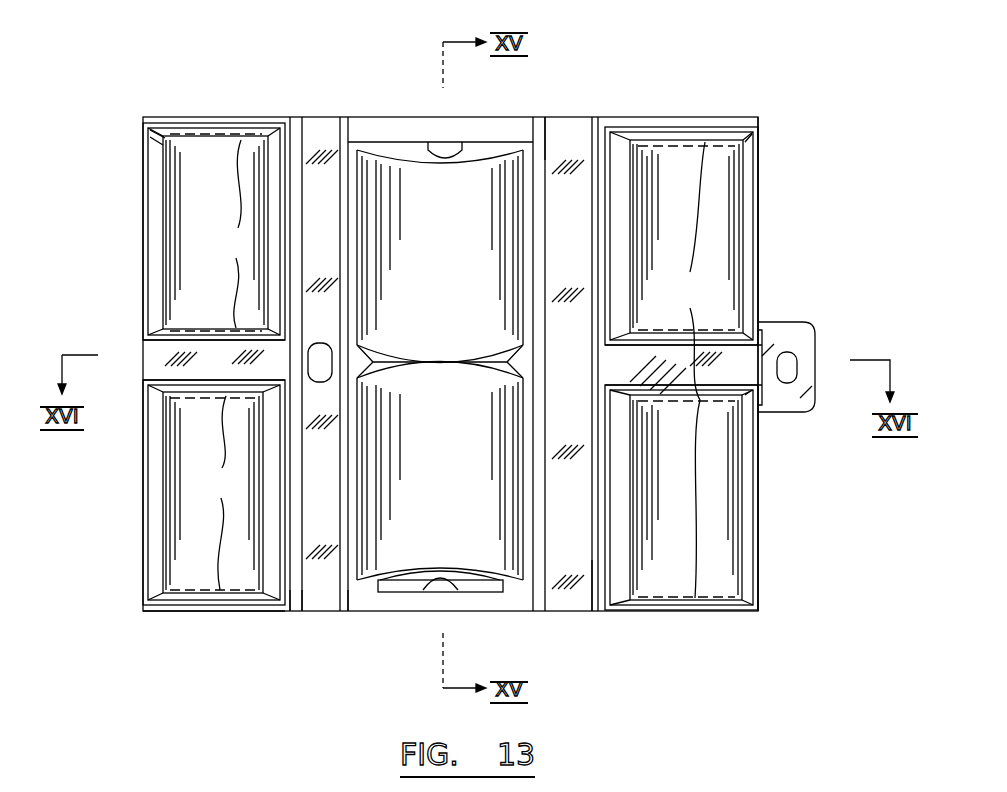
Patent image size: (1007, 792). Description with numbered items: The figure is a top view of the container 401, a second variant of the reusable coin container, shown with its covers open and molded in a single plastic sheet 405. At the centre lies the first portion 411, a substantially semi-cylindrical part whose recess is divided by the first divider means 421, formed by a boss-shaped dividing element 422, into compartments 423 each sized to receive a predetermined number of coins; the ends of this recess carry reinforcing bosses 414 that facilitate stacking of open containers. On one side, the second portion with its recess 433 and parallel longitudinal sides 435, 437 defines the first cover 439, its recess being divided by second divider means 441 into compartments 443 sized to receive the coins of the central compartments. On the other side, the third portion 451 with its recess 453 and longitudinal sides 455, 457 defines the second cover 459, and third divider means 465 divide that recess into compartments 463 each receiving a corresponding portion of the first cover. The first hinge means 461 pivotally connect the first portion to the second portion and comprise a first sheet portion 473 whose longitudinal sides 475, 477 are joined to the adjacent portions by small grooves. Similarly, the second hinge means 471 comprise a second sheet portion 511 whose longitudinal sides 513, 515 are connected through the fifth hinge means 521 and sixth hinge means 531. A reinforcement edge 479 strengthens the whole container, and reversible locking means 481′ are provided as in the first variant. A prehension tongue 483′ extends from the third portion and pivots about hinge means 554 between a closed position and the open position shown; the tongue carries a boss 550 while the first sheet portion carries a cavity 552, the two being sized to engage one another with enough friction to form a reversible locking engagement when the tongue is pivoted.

The container 401 is at (727, 47).
The plastic sheet 405 is at (437, 140).
The first portion 411 is at (400, 117).
The reinforcing boss 414 is at (450, 150).
The first divider means 421 is at (440, 362).
The dividing element 422 is at (440, 362).
The compartment 423 is at (370, 140).
The recess 433 is at (192, 240).
The longitudinal side 435 is at (262, 134).
The longitudinal side 437 is at (160, 526).
The first cover 439 is at (148, 622).
The second divider means 441 is at (160, 340).
The compartment 443 is at (200, 181).
The third portion 451 is at (702, 122).
The recess 453 is at (698, 183).
The longitudinal side 455 is at (624, 278).
The longitudinal side 457 is at (735, 525).
The second cover 459 is at (768, 120).
The first hinge means 461 is at (319, 110).
The compartment 463 is at (700, 195).
The third divider means 465 is at (737, 372).
The second hinge means 471 is at (571, 112).
The first sheet portion 473 is at (309, 612).
The longitudinal side 475 is at (345, 612).
The longitudinal side 477 is at (296, 612).
The reinforcement edge 479 is at (186, 122).
The reversible locking means 481′ is at (695, 642).
The prehension tongue 483′ is at (797, 363).
The second sheet portion 511 is at (582, 612).
The longitudinal side 513 is at (580, 132).
The longitudinal side 515 is at (522, 262).
The fifth hinge means 521 is at (538, 480).
The sixth hinge means 531 is at (597, 525).
The boss 550 is at (815, 345).
The cavity 552 is at (322, 383).
The hinge means 554 is at (762, 325).